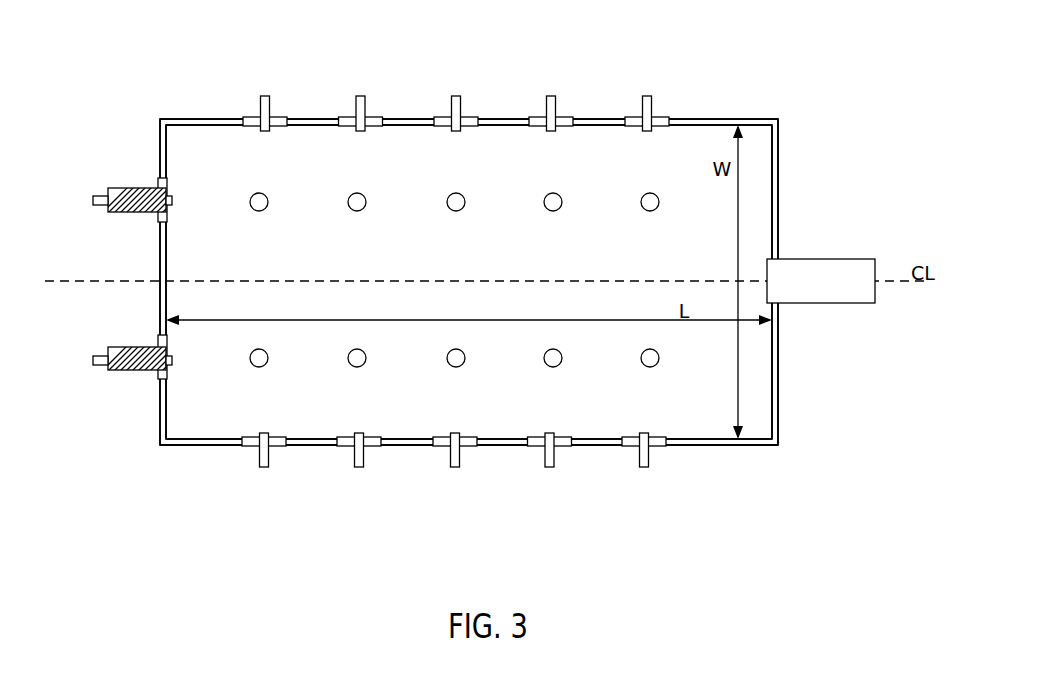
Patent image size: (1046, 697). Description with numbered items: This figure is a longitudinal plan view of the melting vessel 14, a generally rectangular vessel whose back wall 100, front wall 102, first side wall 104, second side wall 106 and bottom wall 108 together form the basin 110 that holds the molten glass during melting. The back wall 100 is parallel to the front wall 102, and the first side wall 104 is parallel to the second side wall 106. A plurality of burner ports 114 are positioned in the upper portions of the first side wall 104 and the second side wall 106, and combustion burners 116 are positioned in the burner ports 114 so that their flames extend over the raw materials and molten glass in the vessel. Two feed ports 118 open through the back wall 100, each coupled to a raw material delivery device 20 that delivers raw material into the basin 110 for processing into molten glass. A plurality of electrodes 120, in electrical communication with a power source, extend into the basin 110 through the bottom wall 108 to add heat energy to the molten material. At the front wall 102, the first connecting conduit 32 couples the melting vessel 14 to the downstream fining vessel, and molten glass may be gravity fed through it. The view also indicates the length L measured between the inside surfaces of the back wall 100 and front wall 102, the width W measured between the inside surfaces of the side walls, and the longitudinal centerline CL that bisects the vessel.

The melting vessel 14 is at (826, 210).
The raw material delivery device 20 is at (120, 174).
The first connecting conduit 32 is at (843, 305).
The back wall 100 is at (158, 290).
The front wall 102 is at (780, 178).
The first side wall 104 is at (720, 118).
The second side wall 106 is at (697, 447).
The bottom wall 108 is at (203, 424).
The basin 110 is at (205, 254).
The burner ports 114 is at (252, 116).
The combustion burners 116 is at (356, 101).
The feed port 118 is at (158, 182).
The electrodes 120 is at (258, 192).